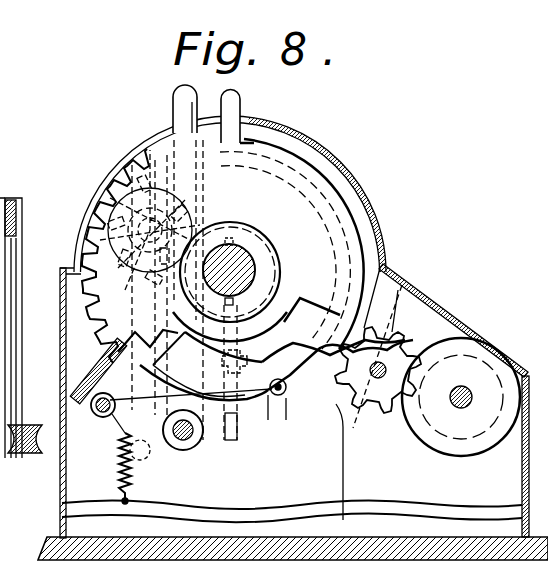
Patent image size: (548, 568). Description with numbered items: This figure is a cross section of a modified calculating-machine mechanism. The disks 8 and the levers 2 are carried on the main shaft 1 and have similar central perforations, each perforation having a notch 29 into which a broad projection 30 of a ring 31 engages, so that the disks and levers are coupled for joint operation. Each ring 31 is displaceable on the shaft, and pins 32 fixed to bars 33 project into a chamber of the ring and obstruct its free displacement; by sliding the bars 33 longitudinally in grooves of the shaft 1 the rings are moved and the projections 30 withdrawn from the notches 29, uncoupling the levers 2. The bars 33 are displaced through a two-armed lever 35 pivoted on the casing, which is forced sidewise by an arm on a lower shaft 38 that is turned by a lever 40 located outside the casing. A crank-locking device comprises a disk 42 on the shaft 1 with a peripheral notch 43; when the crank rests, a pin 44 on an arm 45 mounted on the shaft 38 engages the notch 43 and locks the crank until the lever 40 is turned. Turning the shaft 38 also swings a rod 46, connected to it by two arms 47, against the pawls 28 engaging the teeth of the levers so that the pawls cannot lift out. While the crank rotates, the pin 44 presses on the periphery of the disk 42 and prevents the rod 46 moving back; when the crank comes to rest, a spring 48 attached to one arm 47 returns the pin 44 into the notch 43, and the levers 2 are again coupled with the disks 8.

The shaft 1 is at (252, 262).
The levers 2 is at (235, 102).
The disks 8 is at (362, 327).
The pawls 28 is at (92, 380).
The notch 29 is at (232, 210).
The broad projection 30 is at (238, 215).
The ring 31 is at (232, 313).
The pins 32 is at (234, 240).
The bars 33 is at (244, 266).
The two-armed lever 35 is at (215, 432).
The shaft 38 is at (183, 450).
The lever 40 is at (180, 115).
The disk 42 is at (337, 324).
The peripheral notch 43 is at (280, 394).
The pin 44 is at (288, 392).
The arm 45 is at (205, 425).
The rod 46 is at (97, 413).
The arms 47 is at (107, 418).
The spring 48 is at (120, 468).